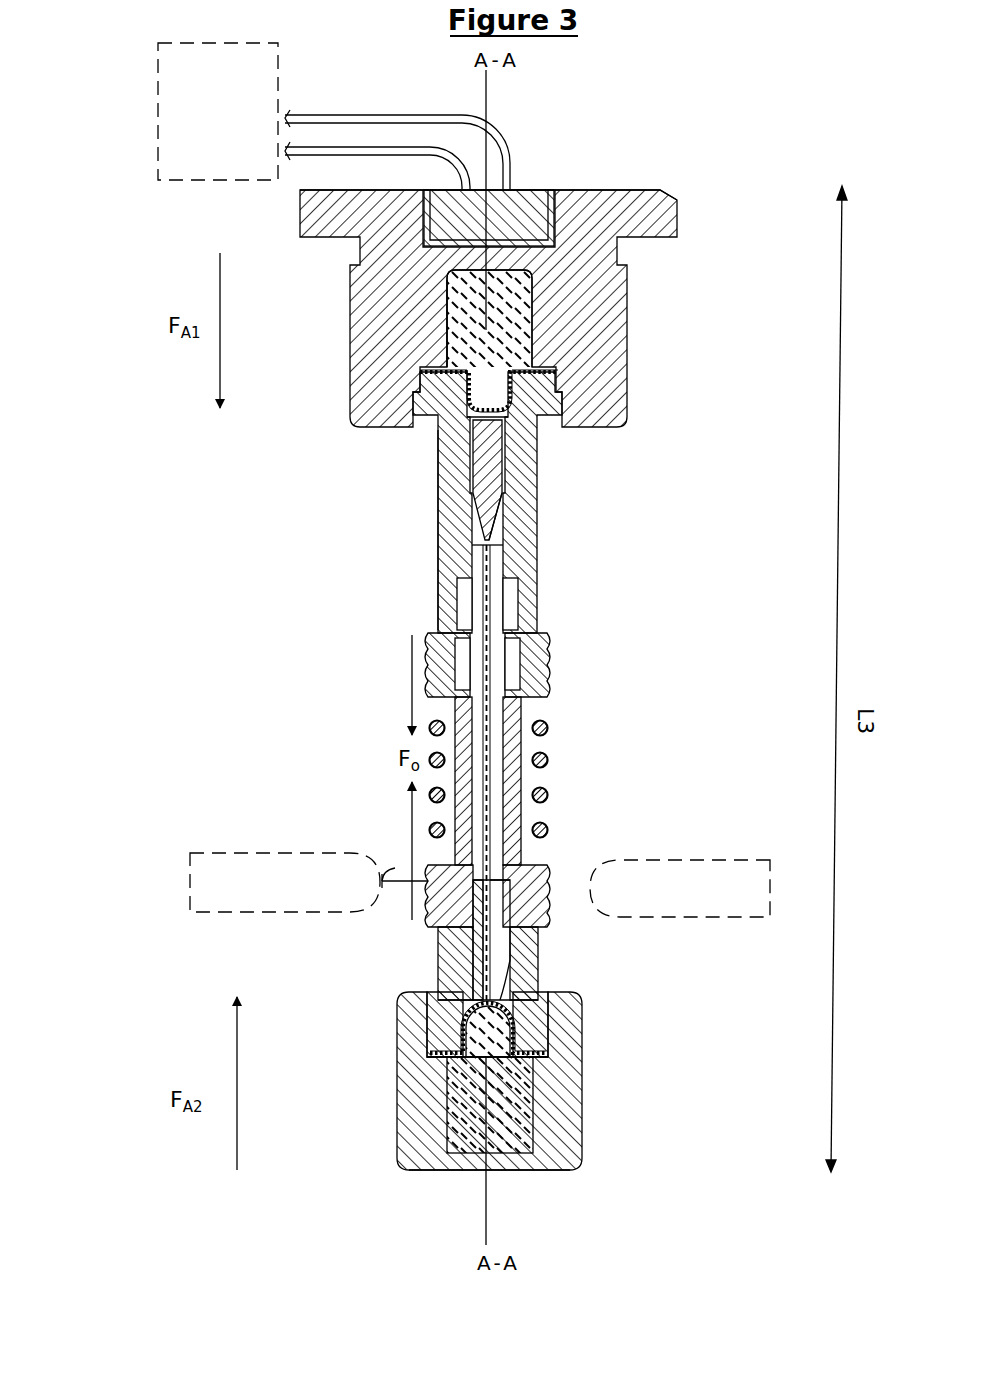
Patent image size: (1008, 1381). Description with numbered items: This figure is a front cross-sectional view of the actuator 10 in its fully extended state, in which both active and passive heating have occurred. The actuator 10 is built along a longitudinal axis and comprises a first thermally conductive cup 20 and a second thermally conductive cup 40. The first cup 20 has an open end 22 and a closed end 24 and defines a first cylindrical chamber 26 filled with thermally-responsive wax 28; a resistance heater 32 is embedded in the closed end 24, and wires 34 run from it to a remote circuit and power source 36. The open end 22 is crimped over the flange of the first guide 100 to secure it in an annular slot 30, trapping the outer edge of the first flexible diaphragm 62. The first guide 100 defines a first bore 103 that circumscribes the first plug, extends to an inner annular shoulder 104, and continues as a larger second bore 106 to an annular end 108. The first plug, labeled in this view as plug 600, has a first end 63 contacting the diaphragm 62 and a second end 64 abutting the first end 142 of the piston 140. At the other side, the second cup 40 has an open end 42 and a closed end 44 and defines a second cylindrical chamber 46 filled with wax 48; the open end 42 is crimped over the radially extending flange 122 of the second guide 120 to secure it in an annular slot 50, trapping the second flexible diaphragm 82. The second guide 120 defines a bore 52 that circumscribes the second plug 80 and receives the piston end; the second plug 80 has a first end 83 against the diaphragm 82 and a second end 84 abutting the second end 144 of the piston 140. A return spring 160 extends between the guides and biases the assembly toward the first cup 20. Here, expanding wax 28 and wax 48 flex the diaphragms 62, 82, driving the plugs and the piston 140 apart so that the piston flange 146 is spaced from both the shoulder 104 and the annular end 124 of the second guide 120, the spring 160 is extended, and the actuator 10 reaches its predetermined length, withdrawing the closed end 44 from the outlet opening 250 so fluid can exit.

The actuator 10 is at (176, 246).
The first thermally conductive cup 20 is at (502, 592).
The open end of the first cup 22 is at (600, 422).
The closed end of the first cup 24 is at (655, 230).
The first cylindrical chamber 26 is at (445, 305).
The thermally-responsive wax 28 is at (515, 295).
The annular slot of the first cup 30 is at (560, 388).
The resistance heater 32 is at (520, 190).
The wires 34 is at (392, 115).
The remote circuit and power source 36 is at (218, 111).
The second thermally conductive cup 40 is at (513, 1098).
The open end of the second cup 42 is at (545, 990).
The closed end of the second cup 44 is at (550, 1172).
The second cylindrical chamber 46 is at (425, 1135).
The thermally-responsive wax 48 is at (455, 1080).
The annular slot of the second cup 50 is at (580, 1015).
The bore of the second guide 52 is at (550, 925).
The first flexible diaphragm 62 is at (430, 370).
The first end of the first plug 63 is at (500, 437).
The second end of the first plug 64 is at (500, 530).
The second plug 80 is at (475, 936).
The second flexible diaphragm 82 is at (580, 1040).
The first end of the second plug 83 is at (450, 980).
The second end of the second plug 84 is at (382, 882).
The first guide 100 is at (477, 701).
The first bore 103 is at (455, 478).
The inner annular shoulder 104 is at (462, 580).
The second bore 106 is at (460, 608).
The annular end of the first guide 108 is at (520, 700).
The second guide 120 is at (455, 952).
The radially extending flange of the second guide 122 is at (420, 1015).
The annular end of the second guide 124 is at (510, 690).
The piston 140 is at (510, 599).
The first end of the piston 142 is at (475, 530).
The second end of the piston 144 is at (550, 893).
The piston flange 146 is at (515, 620).
The return spring 160 is at (546, 830).
The opening of the outlet 250 is at (480, 885).
The poppet 600 is at (500, 480).